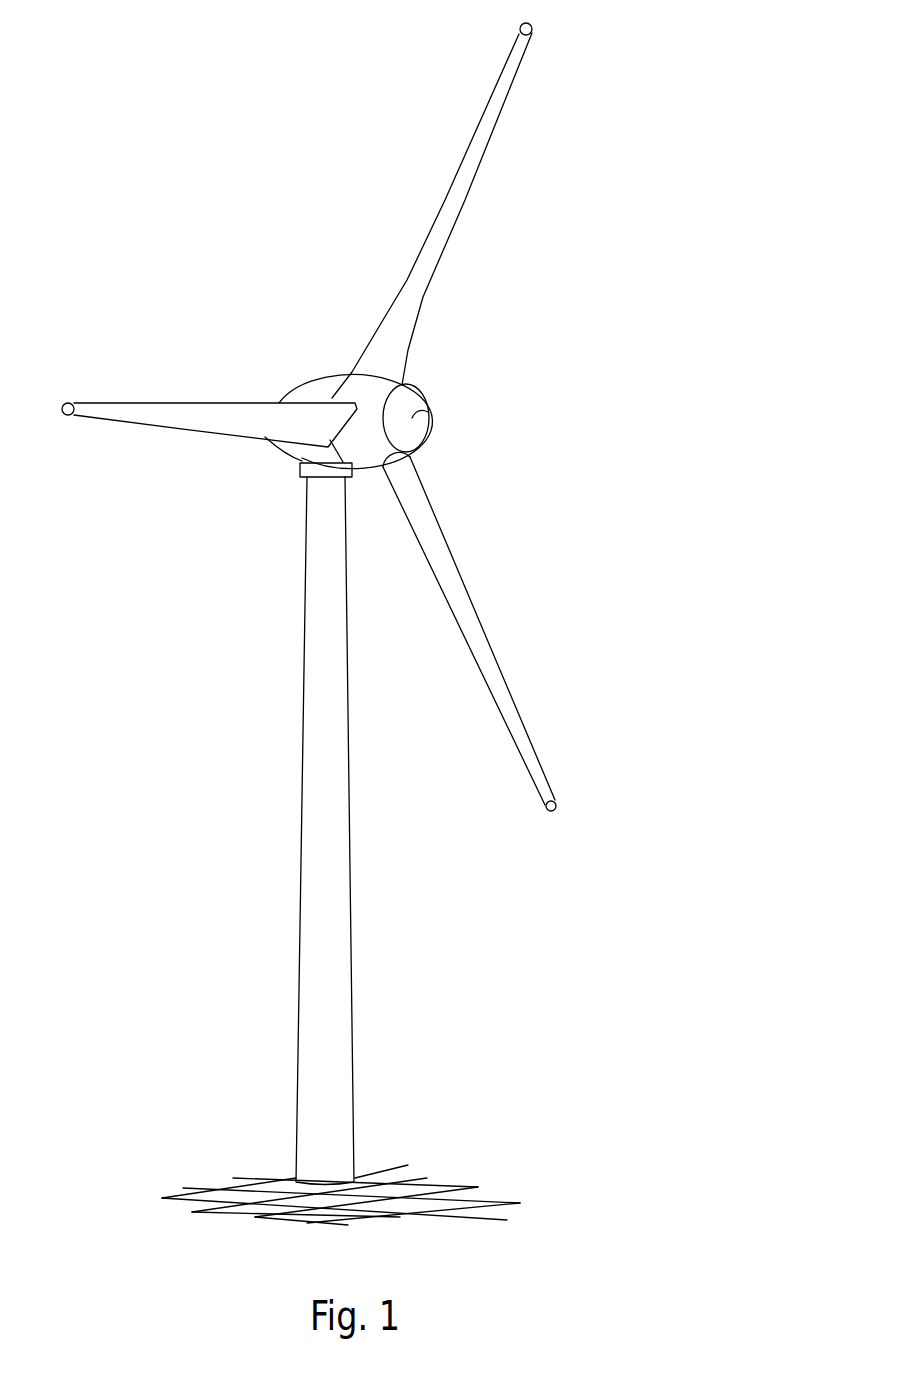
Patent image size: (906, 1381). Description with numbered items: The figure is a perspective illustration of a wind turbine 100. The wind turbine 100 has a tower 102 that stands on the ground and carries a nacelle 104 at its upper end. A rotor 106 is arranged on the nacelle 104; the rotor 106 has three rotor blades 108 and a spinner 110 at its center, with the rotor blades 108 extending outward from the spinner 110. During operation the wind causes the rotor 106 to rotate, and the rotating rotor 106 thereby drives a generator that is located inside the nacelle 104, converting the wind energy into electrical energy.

The wind turbine 100 is at (250, 556).
The tower 102 is at (332, 938).
The nacelle 104 is at (318, 388).
The rotor 106 is at (507, 330).
The rotor blades 108 is at (475, 157).
The spinner 110 is at (431, 418).